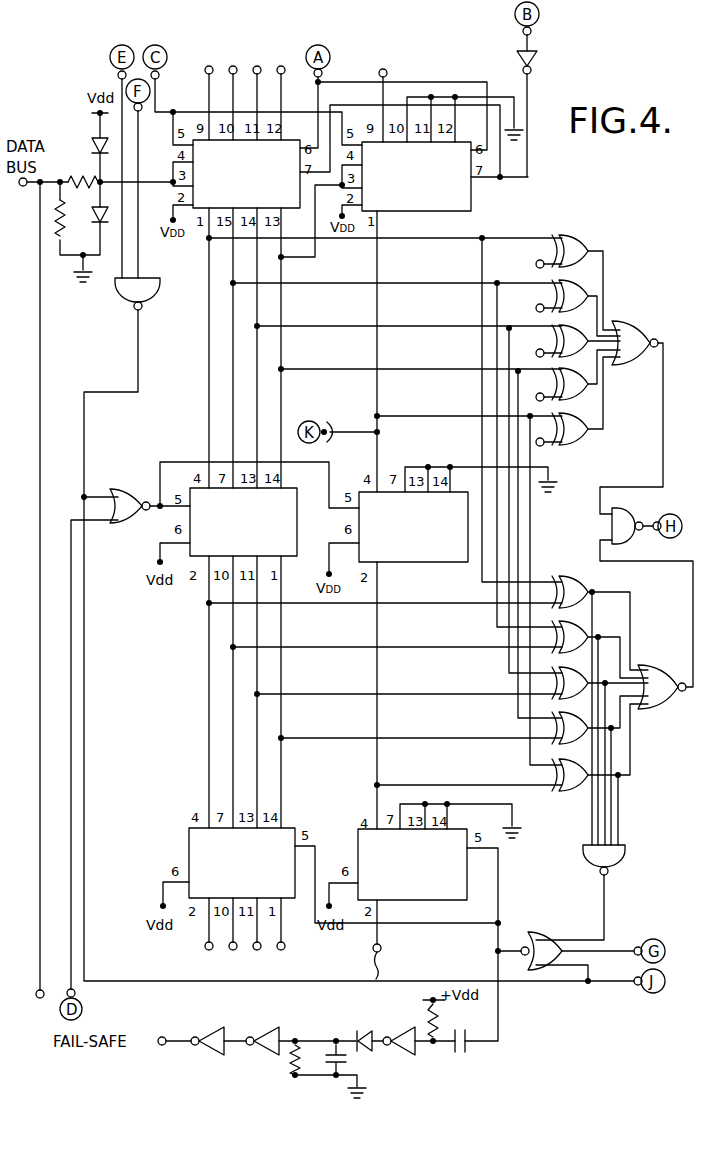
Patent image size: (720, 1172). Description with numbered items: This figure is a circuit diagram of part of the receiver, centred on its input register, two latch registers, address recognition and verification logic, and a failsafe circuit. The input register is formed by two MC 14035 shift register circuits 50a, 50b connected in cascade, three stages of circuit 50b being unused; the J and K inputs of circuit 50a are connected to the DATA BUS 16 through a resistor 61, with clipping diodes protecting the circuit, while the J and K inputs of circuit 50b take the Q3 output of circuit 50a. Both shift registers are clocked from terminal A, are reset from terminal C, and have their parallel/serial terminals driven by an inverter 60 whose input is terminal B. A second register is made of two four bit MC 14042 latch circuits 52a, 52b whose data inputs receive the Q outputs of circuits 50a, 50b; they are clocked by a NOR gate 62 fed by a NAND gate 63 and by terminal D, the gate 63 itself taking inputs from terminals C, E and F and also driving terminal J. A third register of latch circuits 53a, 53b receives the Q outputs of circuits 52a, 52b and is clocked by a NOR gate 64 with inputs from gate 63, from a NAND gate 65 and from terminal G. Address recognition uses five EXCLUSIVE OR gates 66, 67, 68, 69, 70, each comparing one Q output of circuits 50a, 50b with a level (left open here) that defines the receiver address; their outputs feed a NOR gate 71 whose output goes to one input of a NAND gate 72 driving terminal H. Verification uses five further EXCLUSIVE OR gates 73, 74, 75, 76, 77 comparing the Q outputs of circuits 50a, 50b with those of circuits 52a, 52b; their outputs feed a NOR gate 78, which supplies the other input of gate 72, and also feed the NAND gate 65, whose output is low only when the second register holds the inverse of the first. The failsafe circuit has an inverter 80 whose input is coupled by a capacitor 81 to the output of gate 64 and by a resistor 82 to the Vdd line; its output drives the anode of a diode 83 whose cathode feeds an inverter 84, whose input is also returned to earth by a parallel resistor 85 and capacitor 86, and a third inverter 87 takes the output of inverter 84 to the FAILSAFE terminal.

The data bus 16 is at (24, 187).
The shift register circuit 50a is at (199, 214).
The shift register circuit 50b is at (471, 191).
The four bit latch circuit 52a is at (297, 545).
The four bit latch circuit 52b is at (408, 564).
The latch circuit 53a is at (189, 841).
The latch circuit 53b is at (358, 841).
The inverter 60 is at (518, 56).
The resistor 61 is at (80, 180).
The NOR gate 62 is at (124, 494).
The NAND gate 63 is at (121, 296).
The NOR gate 64 is at (541, 936).
The NAND gate 65 is at (625, 866).
The EXCLUSIVE OR gate 66 is at (556, 256).
The EXCLUSIVE OR gate 67 is at (552, 300).
The EXCLUSIVE OR gate 68 is at (552, 344).
The EXCLUSIVE OR gate 69 is at (552, 387).
The EXCLUSIVE OR gate 70 is at (572, 439).
The NOR gate 71 is at (626, 358).
The NAND gate 72 is at (612, 527).
The EXCLUSIVE OR gate 73 is at (572, 581).
The EXCLUSIVE OR gate 74 is at (573, 641).
The EXCLUSIVE OR gate 75 is at (573, 686).
The EXCLUSIVE OR gate 76 is at (573, 732).
The EXCLUSIVE OR gate 77 is at (572, 789).
The NOR gate 78 is at (655, 675).
The inverter 80 is at (398, 1034).
The capacitor 81 is at (466, 1055).
The resistor 82 is at (447, 1016).
The diode 83 is at (357, 1034).
The inverter 84 is at (253, 1034).
The resistor 85 is at (290, 1062).
The capacitor 86 is at (350, 1062).
The inverter 87 is at (203, 1034).